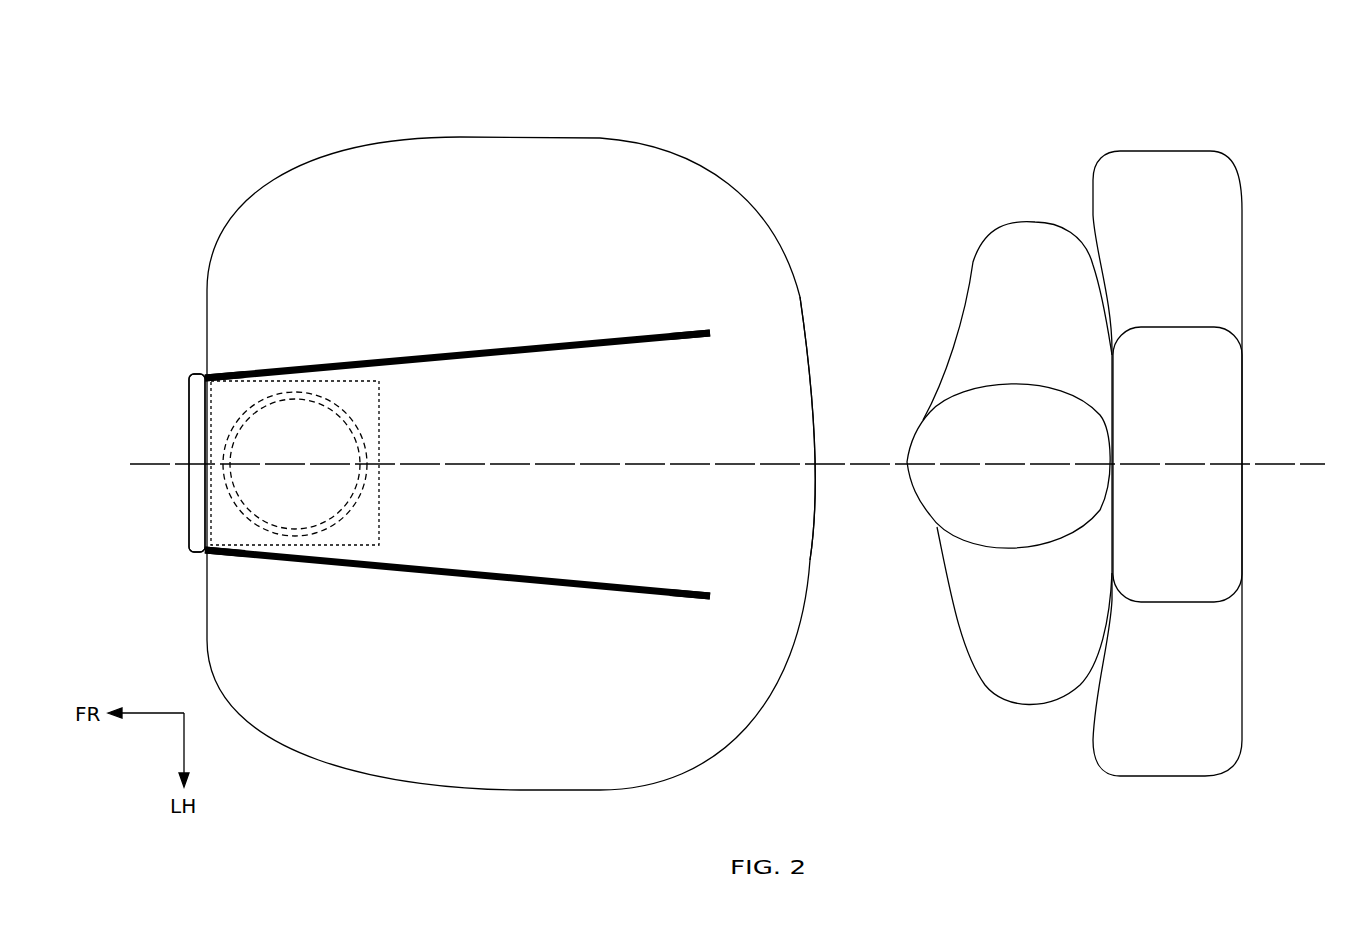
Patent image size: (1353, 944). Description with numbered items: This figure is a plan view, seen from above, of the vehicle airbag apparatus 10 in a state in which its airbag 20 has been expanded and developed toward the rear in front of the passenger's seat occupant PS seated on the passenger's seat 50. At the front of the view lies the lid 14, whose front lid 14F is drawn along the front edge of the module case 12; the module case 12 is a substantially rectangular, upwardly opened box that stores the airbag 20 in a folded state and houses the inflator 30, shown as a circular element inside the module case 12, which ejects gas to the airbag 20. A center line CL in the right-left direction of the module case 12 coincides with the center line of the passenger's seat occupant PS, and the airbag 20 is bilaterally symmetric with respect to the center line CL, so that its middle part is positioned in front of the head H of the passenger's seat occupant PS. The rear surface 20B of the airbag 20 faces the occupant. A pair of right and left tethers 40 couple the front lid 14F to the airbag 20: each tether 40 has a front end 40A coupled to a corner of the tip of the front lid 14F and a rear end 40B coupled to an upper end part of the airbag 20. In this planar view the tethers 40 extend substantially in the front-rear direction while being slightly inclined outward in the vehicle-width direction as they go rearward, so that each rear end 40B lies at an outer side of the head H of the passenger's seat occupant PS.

The vehicle airbag apparatus 10 is at (767, 122).
The module case 12 is at (383, 440).
The lid 14 is at (197, 463).
The front lid 14F is at (188, 431).
The airbag 20 is at (465, 136).
The rear surface 20B is at (805, 300).
The inflator 30 is at (356, 507).
The tether 40 is at (450, 350).
The front end 40A is at (204, 376).
The rear end 40B is at (710, 330).
The passenger's seat 50 is at (1163, 151).
The head H is at (924, 418).
The passenger's seat occupant PS is at (1035, 222).
The center line CL is at (1275, 462).